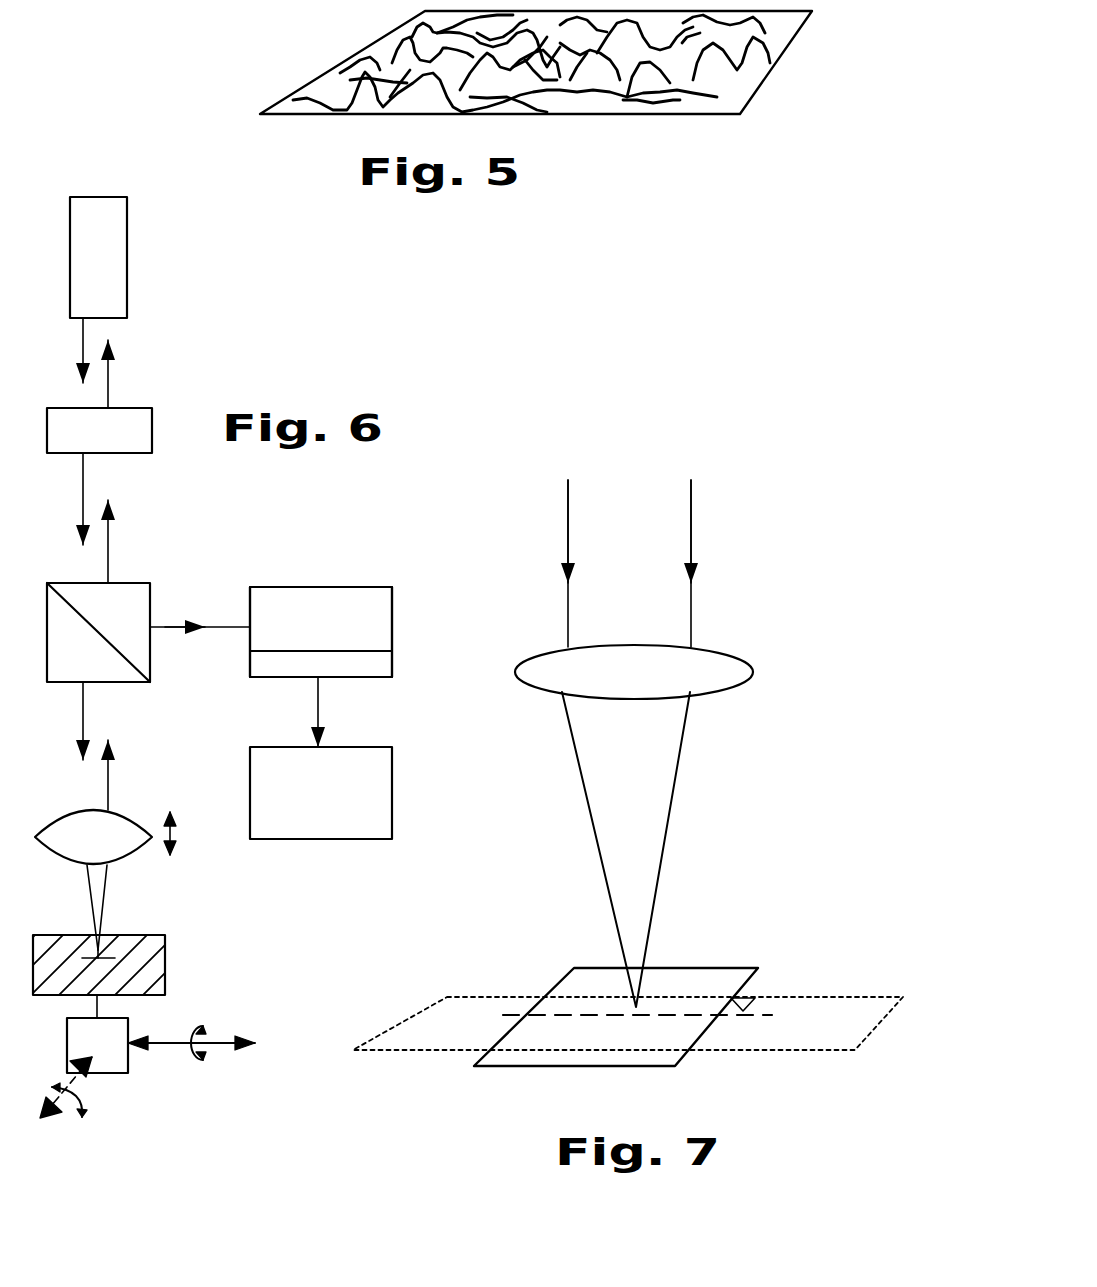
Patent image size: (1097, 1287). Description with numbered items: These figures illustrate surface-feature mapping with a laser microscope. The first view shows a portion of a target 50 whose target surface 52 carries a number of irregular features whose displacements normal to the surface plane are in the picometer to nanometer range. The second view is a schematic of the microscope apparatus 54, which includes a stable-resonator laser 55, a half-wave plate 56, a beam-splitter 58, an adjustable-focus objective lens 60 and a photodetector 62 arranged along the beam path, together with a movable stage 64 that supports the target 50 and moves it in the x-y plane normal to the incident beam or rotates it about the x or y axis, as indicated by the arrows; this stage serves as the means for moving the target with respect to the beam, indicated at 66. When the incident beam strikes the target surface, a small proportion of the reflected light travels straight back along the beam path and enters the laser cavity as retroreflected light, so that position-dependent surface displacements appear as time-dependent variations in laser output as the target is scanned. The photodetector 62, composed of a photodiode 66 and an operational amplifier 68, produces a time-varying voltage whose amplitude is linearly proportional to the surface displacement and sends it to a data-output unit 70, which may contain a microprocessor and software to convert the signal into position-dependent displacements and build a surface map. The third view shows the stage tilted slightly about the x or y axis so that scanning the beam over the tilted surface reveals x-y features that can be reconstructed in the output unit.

In FIG. 5, the target 50 is at (687, 120).
In FIG. 6, the target 50 is at (165, 967).
In FIG. 7, the target 50 is at (680, 984).
In FIG. 5, the target surface 52 is at (333, 90).
In FIG. 6, the microscope apparatus 54 is at (178, 550).
In FIG. 6, the stable-resonator laser 55 is at (128, 290).
In FIG. 6, the half-wave plate 56 is at (125, 405).
In FIG. 6, the beam-splitter 58 is at (150, 663).
In FIG. 7, the beam-splitter 58 is at (747, 660).
In FIG. 6, the adjustable-focus objective lens 60 is at (137, 852).
In FIG. 6, the photodetector 62 is at (393, 635).
In FIG. 6, the movable stage 64 is at (65, 1030).
In FIG. 6, the photodiode 66 is at (92, 900).
In FIG. 7, the photodiode 66 is at (654, 821).
In FIG. 6, the operational amplifier 68 is at (357, 678).
In FIG. 6, the data-output unit 70 is at (310, 839).